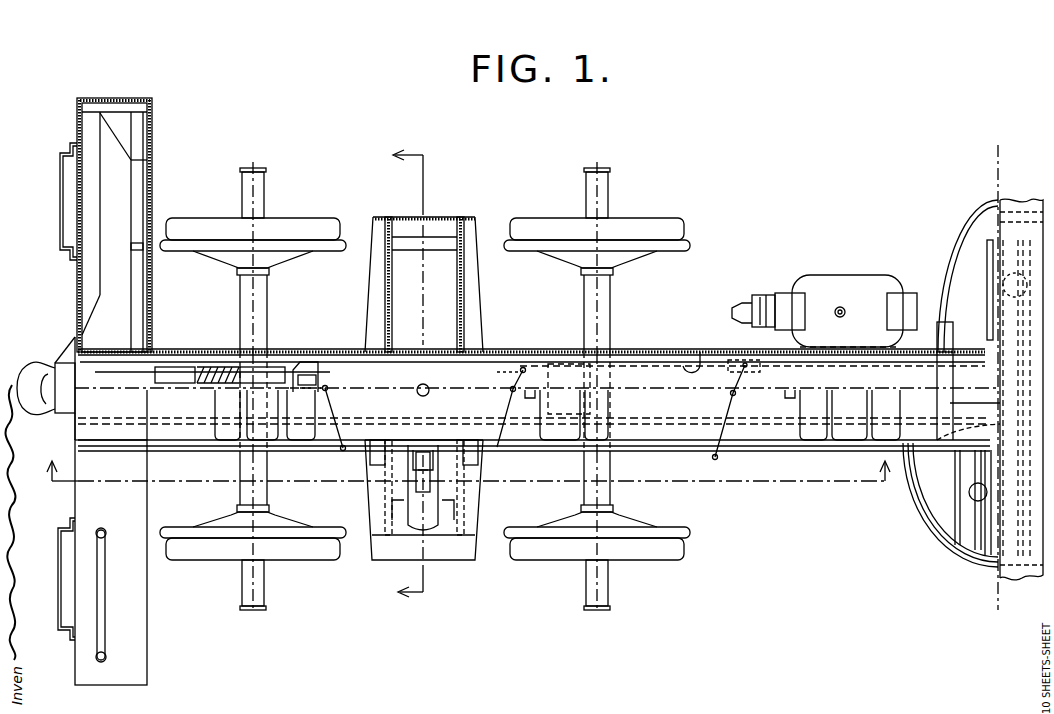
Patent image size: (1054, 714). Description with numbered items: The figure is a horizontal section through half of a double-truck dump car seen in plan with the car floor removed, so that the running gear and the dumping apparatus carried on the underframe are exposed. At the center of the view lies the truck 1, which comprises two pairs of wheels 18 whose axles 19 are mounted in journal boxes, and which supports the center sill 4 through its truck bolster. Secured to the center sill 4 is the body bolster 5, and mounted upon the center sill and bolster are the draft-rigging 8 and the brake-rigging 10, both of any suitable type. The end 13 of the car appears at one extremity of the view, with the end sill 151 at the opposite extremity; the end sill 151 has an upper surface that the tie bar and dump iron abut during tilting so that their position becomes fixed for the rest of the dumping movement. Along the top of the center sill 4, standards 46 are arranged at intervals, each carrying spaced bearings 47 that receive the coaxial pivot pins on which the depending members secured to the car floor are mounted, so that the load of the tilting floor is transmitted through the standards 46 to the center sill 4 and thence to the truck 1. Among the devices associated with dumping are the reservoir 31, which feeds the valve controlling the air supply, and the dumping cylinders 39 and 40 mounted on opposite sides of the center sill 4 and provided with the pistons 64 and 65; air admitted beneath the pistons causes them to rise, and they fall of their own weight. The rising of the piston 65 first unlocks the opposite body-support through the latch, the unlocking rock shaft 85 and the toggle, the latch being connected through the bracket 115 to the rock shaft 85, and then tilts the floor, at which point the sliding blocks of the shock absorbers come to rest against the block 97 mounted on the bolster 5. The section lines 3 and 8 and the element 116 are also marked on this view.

The truck 1 is at (415, 565).
The section line 3- 3 is at (466, 489).
The center sill 4 is at (508, 386).
The bolster 5 is at (466, 578).
The draft-rigging 8 is at (215, 374).
The brake-rigging 10 is at (726, 494).
The end 13 is at (76, 280).
The wheel 18 is at (305, 226).
The axle 19 is at (262, 302).
The reservoir 31 is at (690, 360).
The dumping cylinder 39 is at (951, 495).
The dumping cylinder 40 is at (982, 377).
The standard 46 is at (222, 402).
The bearing 47 is at (238, 396).
The piston 64 is at (978, 500).
The piston 65 is at (1013, 212).
The unlocking rock shaft 85 is at (786, 446).
The block 97 is at (406, 532).
The bracket 115 is at (368, 466).
The link 116 is at (479, 456).
The end sill 151 is at (140, 123).